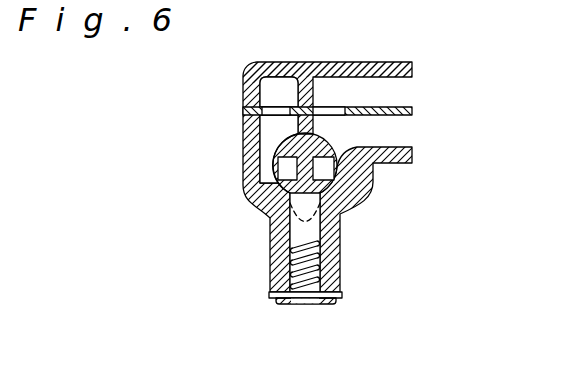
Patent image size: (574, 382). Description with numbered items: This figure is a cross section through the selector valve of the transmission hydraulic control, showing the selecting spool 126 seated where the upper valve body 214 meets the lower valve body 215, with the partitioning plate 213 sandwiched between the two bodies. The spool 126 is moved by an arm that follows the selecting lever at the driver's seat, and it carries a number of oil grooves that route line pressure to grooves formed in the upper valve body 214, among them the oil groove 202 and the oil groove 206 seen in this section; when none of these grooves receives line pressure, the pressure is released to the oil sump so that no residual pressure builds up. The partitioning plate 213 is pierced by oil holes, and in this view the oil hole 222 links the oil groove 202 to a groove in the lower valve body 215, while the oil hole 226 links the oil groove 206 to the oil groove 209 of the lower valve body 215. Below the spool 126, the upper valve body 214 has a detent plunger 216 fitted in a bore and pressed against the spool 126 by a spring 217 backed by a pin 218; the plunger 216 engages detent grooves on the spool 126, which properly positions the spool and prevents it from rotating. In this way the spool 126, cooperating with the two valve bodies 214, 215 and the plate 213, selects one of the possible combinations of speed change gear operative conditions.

The selecting spool 126 is at (333, 146).
The oil groove 202 is at (360, 130).
The oil groove 206 is at (272, 133).
The oil groove 209 is at (283, 83).
The partitioning plate 213 is at (395, 113).
The upper valve body 214 is at (365, 188).
The lower valve body 215 is at (386, 62).
The detent plunger 216 is at (315, 228).
The spring 217 is at (318, 262).
The pin 218 is at (308, 305).
The oil hole 222 is at (336, 106).
The oil hole 226 is at (274, 107).